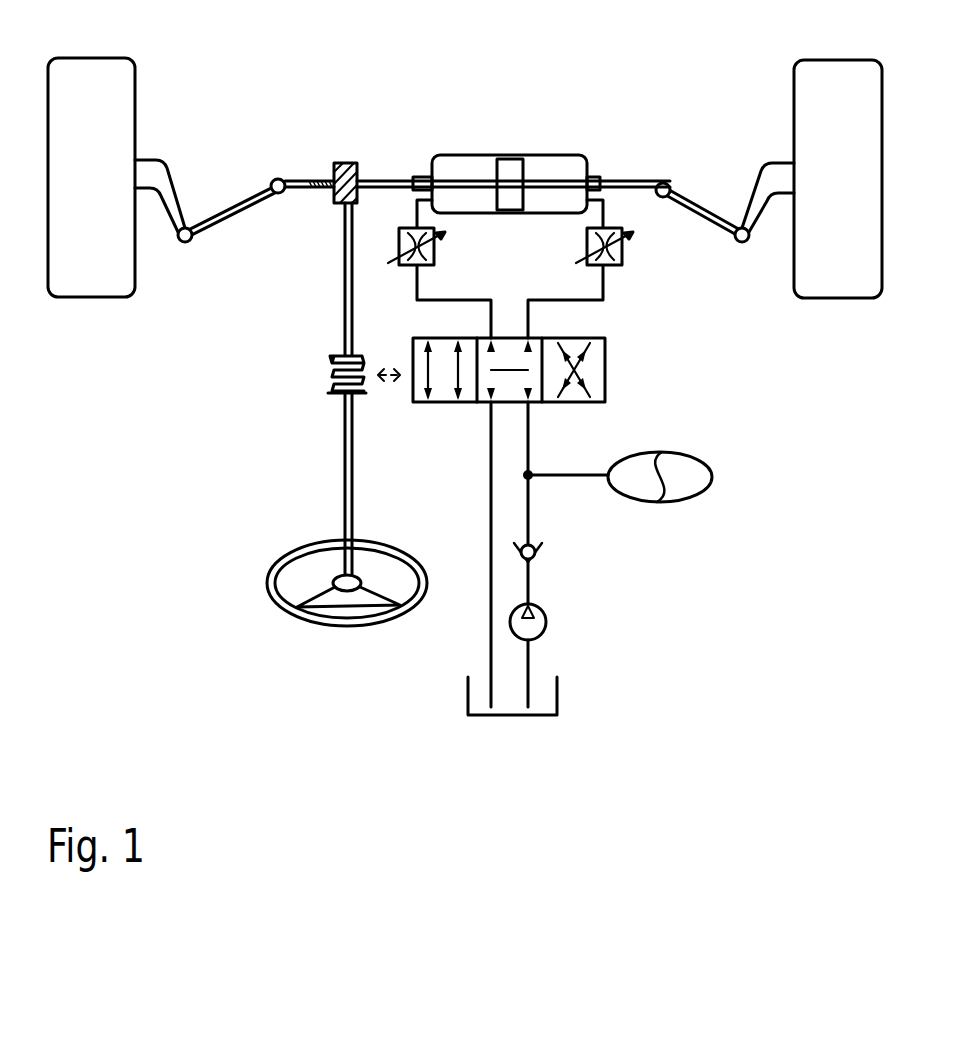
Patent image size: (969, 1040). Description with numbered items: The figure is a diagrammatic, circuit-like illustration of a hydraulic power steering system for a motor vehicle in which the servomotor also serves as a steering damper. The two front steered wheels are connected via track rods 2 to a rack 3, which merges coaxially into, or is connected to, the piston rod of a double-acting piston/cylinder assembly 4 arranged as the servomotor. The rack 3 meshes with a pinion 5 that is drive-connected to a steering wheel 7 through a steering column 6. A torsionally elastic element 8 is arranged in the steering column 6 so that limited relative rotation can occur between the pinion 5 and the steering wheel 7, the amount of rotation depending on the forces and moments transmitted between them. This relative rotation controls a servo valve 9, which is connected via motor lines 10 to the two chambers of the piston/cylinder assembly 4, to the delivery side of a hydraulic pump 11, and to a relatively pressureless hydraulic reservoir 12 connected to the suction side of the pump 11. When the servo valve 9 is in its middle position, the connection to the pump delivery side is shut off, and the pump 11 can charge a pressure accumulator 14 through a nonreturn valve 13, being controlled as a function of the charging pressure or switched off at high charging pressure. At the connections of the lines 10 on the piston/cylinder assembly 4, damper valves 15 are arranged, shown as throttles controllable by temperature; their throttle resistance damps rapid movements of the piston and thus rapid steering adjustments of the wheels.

The track rods 2 is at (241, 205).
The rack 3 is at (296, 182).
The double-acting piston/cylinder assembly 4 is at (463, 163).
The pinion 5 is at (350, 163).
The steering column 6 is at (345, 430).
The steering wheel 7 is at (357, 625).
The torsionally elastic element 8 is at (333, 375).
The servo valve 9 is at (598, 382).
The motor lines 10 is at (417, 285).
The hydraulic pump 11 is at (545, 625).
The hydraulic reservoir 12 is at (552, 695).
The nonreturn valve 13 is at (537, 557).
The pressure accumulator 14 is at (702, 487).
The damper valves 15 is at (604, 266).